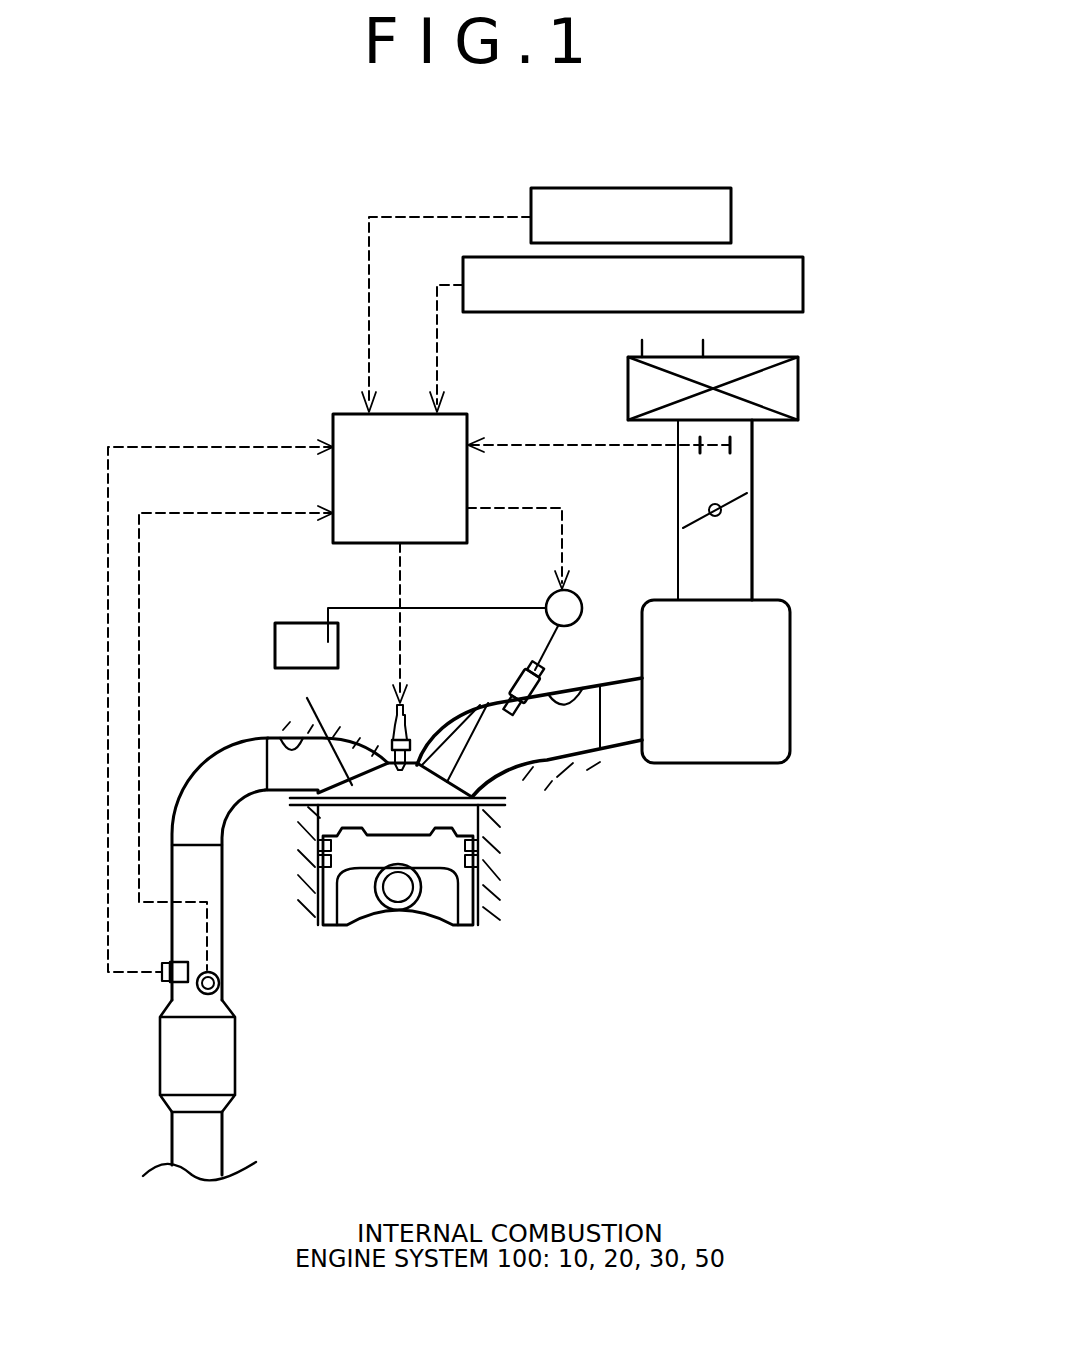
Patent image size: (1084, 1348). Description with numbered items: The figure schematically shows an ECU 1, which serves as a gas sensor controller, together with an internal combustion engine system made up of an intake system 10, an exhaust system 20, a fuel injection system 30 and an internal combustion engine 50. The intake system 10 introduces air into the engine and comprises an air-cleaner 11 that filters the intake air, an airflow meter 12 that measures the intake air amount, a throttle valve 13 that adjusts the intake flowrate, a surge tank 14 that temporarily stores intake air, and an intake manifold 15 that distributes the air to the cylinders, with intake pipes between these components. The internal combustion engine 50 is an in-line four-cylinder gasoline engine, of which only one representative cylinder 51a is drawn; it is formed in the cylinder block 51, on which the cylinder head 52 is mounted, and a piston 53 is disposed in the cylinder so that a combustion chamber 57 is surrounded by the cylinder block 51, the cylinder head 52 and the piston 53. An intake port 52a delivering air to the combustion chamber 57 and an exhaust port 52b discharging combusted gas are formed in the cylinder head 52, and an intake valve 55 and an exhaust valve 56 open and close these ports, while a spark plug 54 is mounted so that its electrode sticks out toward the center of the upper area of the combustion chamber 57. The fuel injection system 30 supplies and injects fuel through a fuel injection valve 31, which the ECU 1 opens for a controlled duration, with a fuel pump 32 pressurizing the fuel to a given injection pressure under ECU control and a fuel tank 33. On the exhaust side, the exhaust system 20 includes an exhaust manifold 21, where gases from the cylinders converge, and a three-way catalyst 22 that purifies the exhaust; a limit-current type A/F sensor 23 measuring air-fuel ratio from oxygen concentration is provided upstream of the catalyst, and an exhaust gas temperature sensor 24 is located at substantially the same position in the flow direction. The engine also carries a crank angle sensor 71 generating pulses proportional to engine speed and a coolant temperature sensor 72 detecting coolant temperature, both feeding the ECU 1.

The ECU 1 is at (332, 433).
The intake system 10 is at (711, 557).
The air-cleaner 11 is at (798, 392).
The airflow meter 12 is at (735, 448).
The throttle valve 13 is at (740, 500).
The surge tank 14 is at (753, 737).
The intake manifold 15 is at (613, 735).
The exhaust system 20 is at (213, 1001).
The exhaust manifold 21 is at (200, 767).
The three-way catalyst 22 is at (237, 1058).
The A/F sensor 23 is at (162, 977).
The exhaust gas temperature sensor 24 is at (219, 983).
The fuel injection system 30 is at (380, 628).
The fuel injection valve 31 is at (530, 670).
The fuel pump 32 is at (547, 598).
The fuel tank 33 is at (310, 622).
The internal combustion engine 50 is at (427, 811).
The cylinder block 51 is at (305, 905).
The cylinder 51a is at (470, 893).
The cylinder head 52 is at (427, 743).
The intake port 52a is at (567, 688).
The exhaust port 52b is at (280, 730).
The piston 53 is at (360, 898).
The spark plug 54 is at (412, 737).
The intake valve 55 is at (467, 703).
The exhaust valve 56 is at (320, 712).
The combustion chamber 57 is at (470, 817).
The crank angle sensor 71 is at (733, 213).
The coolant temperature sensor 72 is at (783, 256).